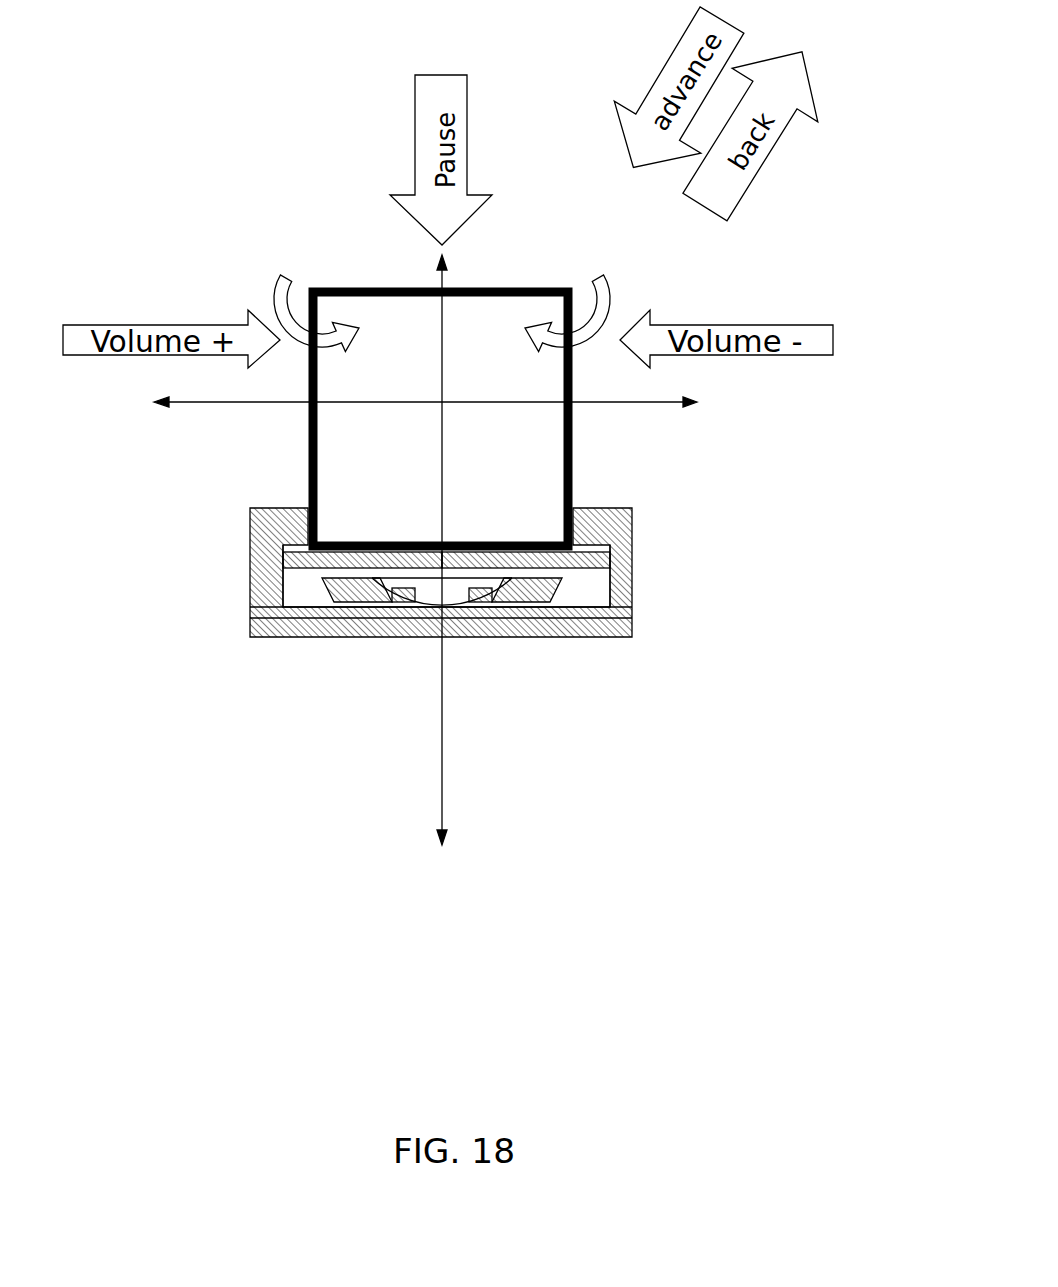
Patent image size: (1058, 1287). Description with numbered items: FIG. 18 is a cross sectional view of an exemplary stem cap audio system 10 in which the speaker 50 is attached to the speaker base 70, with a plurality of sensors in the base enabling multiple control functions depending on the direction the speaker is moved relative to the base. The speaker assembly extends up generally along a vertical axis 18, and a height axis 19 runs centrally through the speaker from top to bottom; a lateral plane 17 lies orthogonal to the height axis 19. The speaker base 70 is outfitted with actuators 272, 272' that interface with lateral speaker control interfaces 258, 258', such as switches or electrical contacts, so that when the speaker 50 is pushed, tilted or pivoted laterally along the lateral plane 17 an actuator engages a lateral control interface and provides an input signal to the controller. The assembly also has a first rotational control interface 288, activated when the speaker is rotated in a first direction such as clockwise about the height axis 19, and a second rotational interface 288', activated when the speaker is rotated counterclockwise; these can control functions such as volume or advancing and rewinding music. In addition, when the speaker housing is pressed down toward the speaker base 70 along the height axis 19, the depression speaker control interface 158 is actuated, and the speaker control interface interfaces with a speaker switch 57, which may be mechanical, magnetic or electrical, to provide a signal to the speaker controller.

The stem cap audio system 10 is at (314, 259).
The lateral plane 17 is at (211, 403).
The vertical axis 18 is at (447, 272).
The height axis 19 is at (445, 823).
The speaker 50 is at (568, 428).
The speaker switch 57 is at (416, 610).
The speaker base 70 is at (603, 622).
The depression speaker control interface 158 is at (440, 622).
The lateral speaker control interface 258 is at (321, 658).
The lateral speaker control interface 258' is at (537, 647).
The actuator 272 is at (358, 673).
The actuator 272' is at (502, 666).
The first rotational control interface 288 is at (280, 574).
The second rotational interface 288' is at (613, 577).